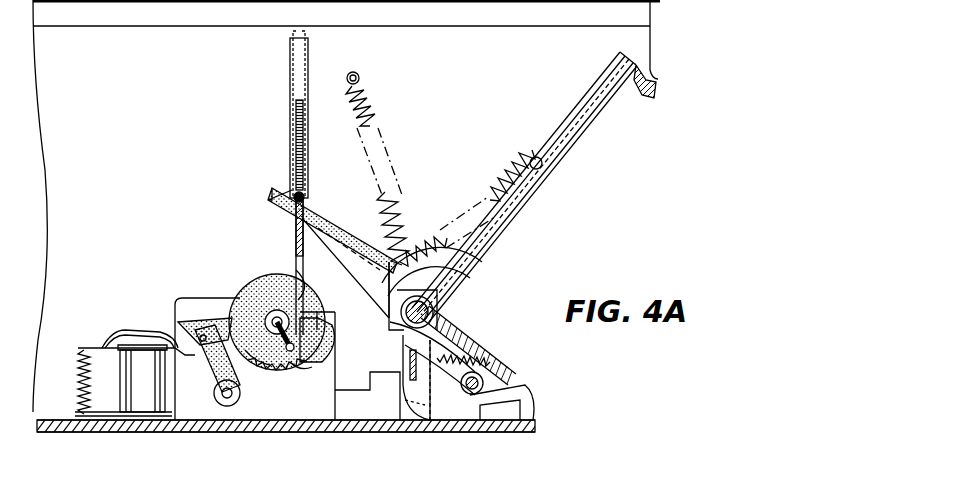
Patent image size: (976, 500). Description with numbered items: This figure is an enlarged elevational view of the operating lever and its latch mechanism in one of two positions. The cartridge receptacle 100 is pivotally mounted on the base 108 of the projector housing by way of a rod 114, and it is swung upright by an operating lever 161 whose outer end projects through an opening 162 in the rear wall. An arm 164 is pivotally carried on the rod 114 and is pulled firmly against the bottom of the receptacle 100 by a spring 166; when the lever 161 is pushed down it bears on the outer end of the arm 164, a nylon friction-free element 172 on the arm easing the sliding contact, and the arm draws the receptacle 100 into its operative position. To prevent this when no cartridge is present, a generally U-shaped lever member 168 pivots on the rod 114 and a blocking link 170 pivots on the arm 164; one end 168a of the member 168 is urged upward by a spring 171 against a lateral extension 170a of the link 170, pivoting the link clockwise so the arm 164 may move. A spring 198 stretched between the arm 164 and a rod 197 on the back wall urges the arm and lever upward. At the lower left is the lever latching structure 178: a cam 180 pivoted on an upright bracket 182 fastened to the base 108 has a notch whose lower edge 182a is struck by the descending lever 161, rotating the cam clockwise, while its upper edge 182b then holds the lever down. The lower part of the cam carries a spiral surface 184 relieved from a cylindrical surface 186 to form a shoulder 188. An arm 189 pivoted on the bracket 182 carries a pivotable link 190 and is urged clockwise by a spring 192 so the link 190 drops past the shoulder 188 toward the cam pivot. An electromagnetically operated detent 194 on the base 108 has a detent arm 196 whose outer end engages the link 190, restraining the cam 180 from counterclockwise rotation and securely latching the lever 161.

The receptacle 100 is at (593, 98).
The base 108 is at (483, 432).
The rod 114 is at (486, 384).
The operating lever 161 is at (296, 103).
The opening 162 is at (307, 149).
The arm 164 is at (470, 273).
The spring 166 is at (433, 240).
The lever member 168 is at (395, 355).
The end of lever member 168a is at (445, 320).
The blocking link 170 is at (426, 407).
The lateral extension 170a is at (445, 294).
The spring 171 is at (490, 353).
The friction-free element 172 is at (345, 222).
The lever latching structure 178 is at (209, 283).
The cam 180 is at (251, 271).
The upright bracket 182 is at (196, 300).
The lower edge of notch 182a is at (326, 338).
The upper edge of cam 182b is at (298, 290).
The spiral surface 184 is at (300, 372).
The cylindrical surface 186 is at (236, 297).
The shoulder 188 is at (242, 366).
The arm 189 is at (214, 380).
The link 190 is at (182, 332).
The spring 192 is at (251, 386).
The electromagnetically operated detent 194 is at (106, 323).
The detent arm 196 is at (170, 345).
The rod 197 is at (360, 78).
The spring 198 is at (373, 119).